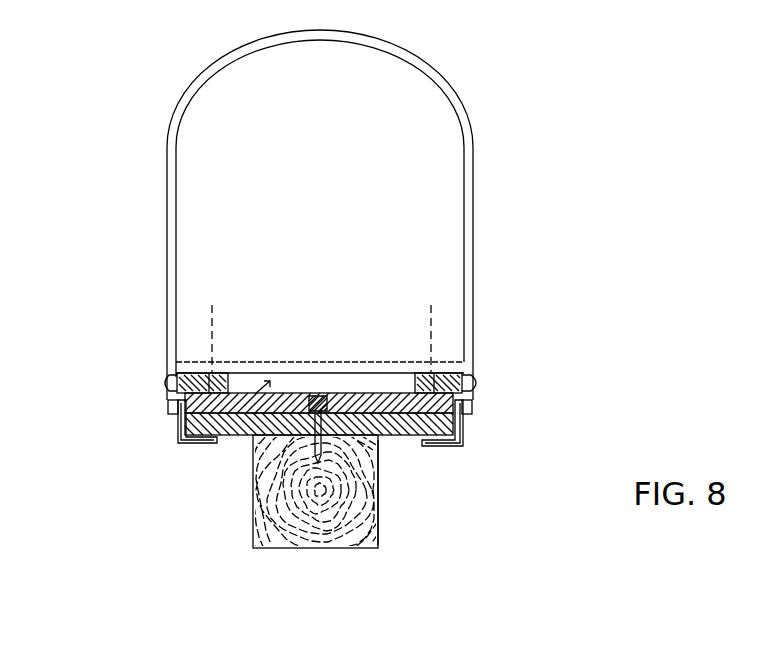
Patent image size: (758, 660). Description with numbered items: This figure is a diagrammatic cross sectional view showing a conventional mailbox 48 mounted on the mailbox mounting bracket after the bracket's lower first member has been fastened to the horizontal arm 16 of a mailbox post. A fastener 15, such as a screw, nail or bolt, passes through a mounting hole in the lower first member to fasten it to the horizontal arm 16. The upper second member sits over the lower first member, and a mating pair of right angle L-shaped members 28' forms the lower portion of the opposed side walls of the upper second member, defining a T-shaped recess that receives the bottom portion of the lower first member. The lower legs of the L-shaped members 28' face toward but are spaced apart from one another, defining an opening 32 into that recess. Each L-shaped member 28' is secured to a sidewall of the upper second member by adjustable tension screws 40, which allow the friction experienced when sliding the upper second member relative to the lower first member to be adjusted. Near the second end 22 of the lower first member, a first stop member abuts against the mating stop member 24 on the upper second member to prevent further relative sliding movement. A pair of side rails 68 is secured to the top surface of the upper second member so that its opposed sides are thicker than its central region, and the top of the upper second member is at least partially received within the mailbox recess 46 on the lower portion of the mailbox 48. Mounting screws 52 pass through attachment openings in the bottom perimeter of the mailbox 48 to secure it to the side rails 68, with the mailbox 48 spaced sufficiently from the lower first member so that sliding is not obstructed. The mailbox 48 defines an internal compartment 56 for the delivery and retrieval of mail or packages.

The fastener 15 is at (378, 467).
The horizontal arm 16 is at (257, 518).
The second end 22 is at (332, 406).
The mating stop member 24 is at (318, 403).
The L-shaped member 28' is at (321, 445).
The opening 32 is at (192, 441).
The adjustable tension screw 40 is at (168, 408).
The mailbox recess 46 is at (262, 394).
The mailbox 48 is at (480, 193).
The mounting screw 52 is at (160, 383).
The internal compartment 56 is at (308, 160).
The side rail 68 is at (180, 364).